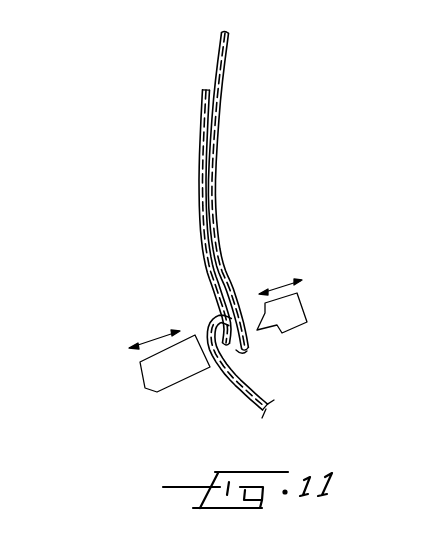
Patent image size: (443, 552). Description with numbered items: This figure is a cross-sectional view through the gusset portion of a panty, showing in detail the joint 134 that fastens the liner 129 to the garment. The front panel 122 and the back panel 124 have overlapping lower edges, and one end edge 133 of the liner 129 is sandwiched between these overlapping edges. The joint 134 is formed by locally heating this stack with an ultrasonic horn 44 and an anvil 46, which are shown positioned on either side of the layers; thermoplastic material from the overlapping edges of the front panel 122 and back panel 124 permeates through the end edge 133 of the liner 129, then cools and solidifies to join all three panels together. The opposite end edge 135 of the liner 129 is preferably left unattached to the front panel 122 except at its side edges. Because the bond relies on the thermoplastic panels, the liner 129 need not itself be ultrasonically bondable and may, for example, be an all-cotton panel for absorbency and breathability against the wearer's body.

The front panel 122 is at (228, 48).
The opposite end edge of the liner 135 is at (203, 82).
The liner 129 is at (190, 190).
The back panel 124 is at (263, 393).
The end edge of the liner 133 is at (243, 357).
The joint 134 is at (243, 302).
The anvil 46 is at (293, 308).
The ultrasonic horn 44 is at (141, 366).